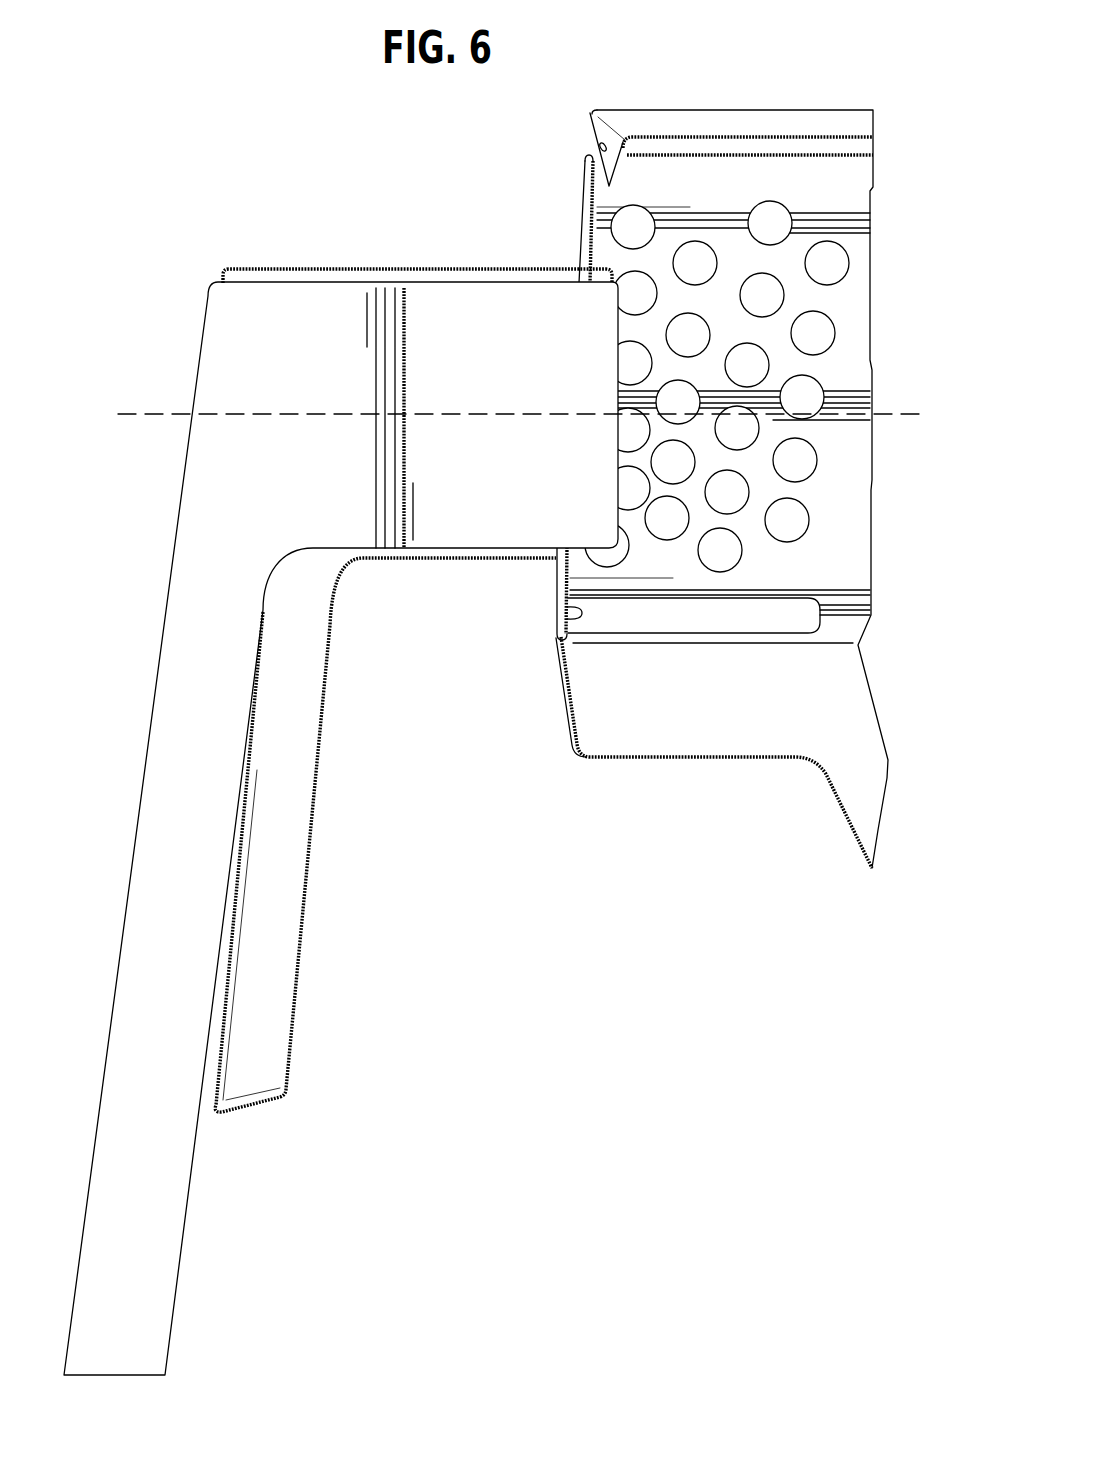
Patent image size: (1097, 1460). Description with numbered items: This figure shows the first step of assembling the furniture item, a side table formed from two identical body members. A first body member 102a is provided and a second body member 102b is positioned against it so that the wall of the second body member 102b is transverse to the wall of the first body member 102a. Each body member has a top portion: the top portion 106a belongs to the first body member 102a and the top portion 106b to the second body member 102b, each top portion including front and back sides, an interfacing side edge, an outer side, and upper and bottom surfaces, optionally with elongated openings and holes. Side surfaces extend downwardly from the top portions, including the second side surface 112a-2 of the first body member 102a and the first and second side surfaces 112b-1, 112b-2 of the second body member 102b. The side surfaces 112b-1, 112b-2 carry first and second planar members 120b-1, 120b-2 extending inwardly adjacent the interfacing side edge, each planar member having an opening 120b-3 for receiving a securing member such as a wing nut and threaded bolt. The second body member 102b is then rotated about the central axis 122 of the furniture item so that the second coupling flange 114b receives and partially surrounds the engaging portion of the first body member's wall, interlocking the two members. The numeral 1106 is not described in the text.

The first body member 102a is at (237, 495).
The second body member 102b is at (760, 72).
The top portion of first body member 106a is at (286, 269).
The top portion of second body member 106b is at (848, 520).
The second side surface of first body member 112a-2 is at (441, 418).
The first side surface of second body member 112b-1 is at (828, 115).
The second side surface of second body member 112b-2 is at (677, 718).
The second coupling flange 114b is at (578, 613).
The first planar member of second body member 120b-1 is at (589, 130).
The second planar member of second body member 120b-2 is at (582, 718).
The opening of planar member 120b-3 is at (606, 148).
The central axis 122 is at (887, 413).
The side wall rib 1106 is at (577, 220).